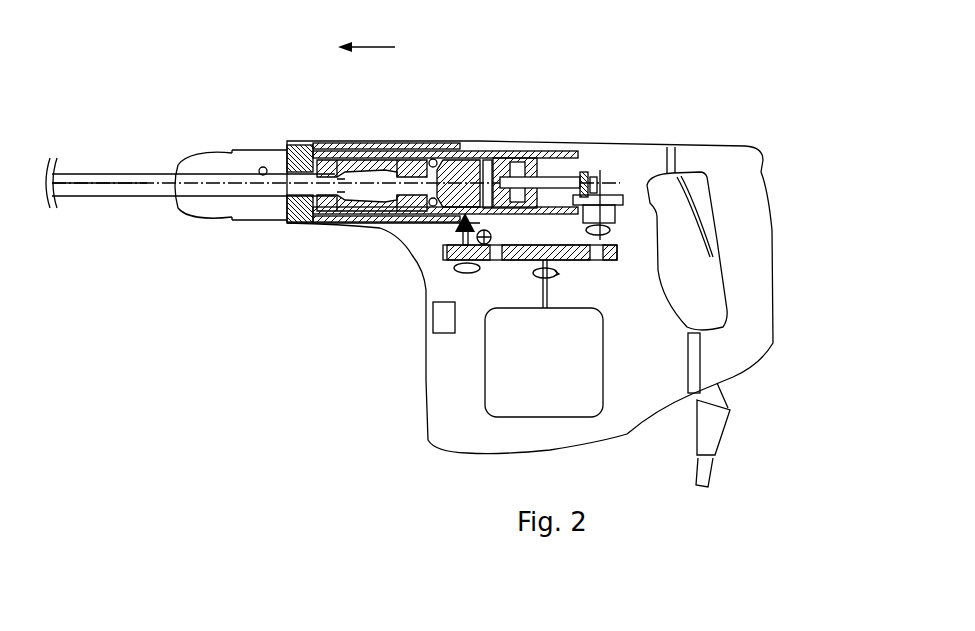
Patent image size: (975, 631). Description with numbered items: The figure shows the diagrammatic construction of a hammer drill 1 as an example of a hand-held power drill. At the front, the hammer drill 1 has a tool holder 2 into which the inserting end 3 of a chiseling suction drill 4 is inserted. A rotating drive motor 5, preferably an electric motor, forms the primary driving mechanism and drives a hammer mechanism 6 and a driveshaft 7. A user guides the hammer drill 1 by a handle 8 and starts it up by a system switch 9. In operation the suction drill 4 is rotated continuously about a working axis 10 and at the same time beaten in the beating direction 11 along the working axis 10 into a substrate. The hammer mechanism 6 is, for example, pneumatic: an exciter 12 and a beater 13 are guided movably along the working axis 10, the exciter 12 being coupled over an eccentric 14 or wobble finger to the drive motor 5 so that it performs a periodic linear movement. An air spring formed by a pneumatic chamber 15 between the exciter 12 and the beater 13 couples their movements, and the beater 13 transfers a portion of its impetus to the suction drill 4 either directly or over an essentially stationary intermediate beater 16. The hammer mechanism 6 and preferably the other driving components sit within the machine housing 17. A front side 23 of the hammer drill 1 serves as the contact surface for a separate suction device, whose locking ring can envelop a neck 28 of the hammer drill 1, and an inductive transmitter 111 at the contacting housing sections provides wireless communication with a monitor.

The hammer drill 1 is at (244, 47).
The tool holder 2 is at (217, 170).
The inserting end 3 is at (233, 170).
The suction drill 4 is at (147, 171).
The drive motor 5 is at (493, 388).
The hammer mechanism 6 is at (537, 95).
The driveshaft 7 is at (328, 150).
The handle 8 is at (751, 234).
The system switch 9 is at (703, 193).
The working axis 10 is at (187, 173).
The beating direction 11 is at (378, 49).
The exciter 12 is at (498, 167).
The beater 13 is at (465, 173).
The eccentric 14 is at (590, 177).
The pneumatic chamber 15 is at (483, 158).
The intermediate beater 16 is at (380, 175).
The machine housing 17 is at (627, 146).
The front side 23 is at (418, 335).
The neck 28 is at (301, 232).
The inductive transmitter 111 is at (434, 317).